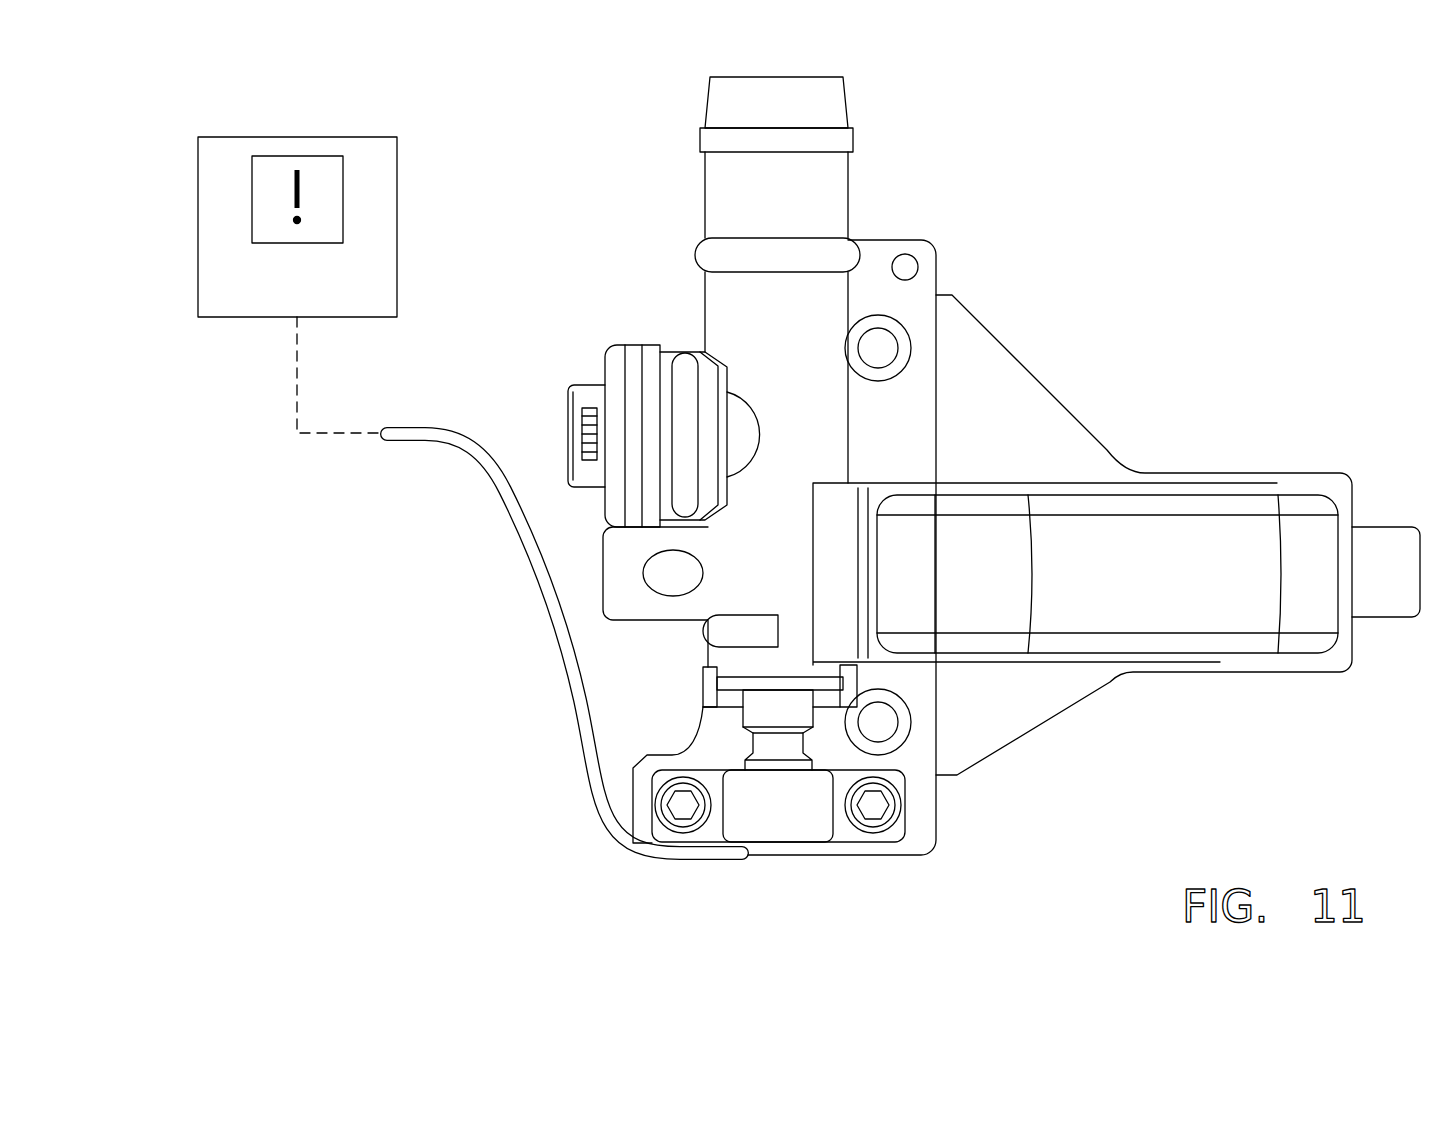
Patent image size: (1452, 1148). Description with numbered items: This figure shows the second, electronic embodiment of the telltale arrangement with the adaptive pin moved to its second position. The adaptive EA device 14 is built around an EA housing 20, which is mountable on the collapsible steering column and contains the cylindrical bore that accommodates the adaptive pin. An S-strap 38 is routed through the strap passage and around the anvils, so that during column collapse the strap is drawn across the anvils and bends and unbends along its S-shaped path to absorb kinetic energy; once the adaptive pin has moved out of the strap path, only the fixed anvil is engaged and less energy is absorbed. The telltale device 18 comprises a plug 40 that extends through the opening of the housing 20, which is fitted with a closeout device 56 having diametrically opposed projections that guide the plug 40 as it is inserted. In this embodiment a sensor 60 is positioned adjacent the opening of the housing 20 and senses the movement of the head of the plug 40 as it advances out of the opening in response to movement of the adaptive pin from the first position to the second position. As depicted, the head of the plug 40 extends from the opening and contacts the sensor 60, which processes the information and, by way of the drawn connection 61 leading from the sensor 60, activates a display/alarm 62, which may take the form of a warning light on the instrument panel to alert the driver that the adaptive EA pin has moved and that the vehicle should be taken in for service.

The adaptive EA device 14 is at (1047, 377).
The telltale device 18 is at (717, 658).
The EA housing 20 is at (852, 178).
The S-strap 38 is at (613, 610).
The plug 40 is at (745, 745).
The closeout device 56 is at (802, 717).
The sensor 60 is at (805, 817).
The cable 61 is at (515, 522).
The display/alarm 62 is at (228, 148).